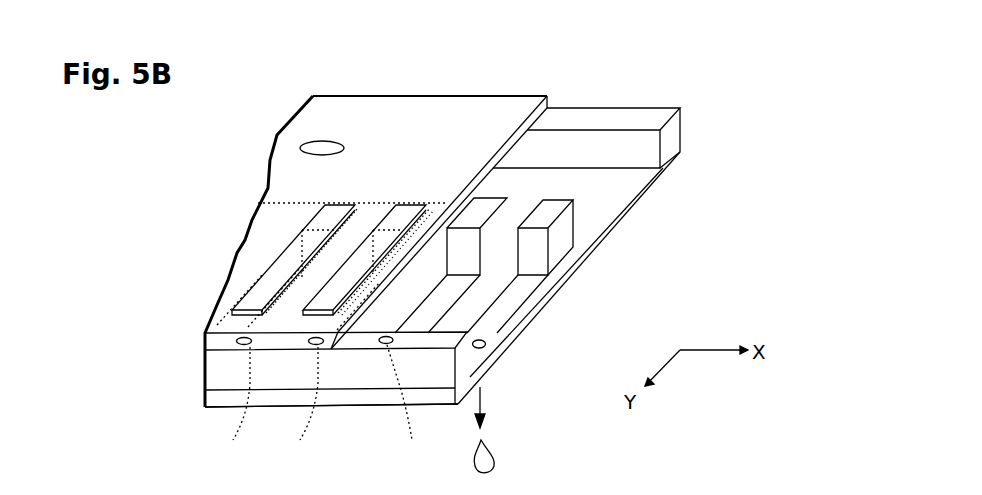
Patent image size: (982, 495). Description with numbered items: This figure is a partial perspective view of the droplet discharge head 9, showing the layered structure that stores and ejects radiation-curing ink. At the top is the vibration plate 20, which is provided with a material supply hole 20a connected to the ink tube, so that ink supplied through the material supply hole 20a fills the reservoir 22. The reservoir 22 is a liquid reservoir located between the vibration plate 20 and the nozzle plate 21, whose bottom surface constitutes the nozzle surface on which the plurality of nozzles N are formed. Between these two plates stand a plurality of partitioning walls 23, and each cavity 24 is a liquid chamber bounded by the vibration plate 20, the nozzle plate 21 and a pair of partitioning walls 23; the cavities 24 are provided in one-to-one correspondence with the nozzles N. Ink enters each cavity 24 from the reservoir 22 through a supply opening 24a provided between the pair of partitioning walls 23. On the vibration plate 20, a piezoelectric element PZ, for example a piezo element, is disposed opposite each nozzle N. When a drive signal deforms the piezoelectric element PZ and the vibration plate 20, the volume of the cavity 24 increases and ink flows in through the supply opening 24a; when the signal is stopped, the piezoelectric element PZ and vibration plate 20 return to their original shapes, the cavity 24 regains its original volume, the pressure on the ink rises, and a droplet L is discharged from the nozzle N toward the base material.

The droplet discharge head 9 is at (688, 90).
The vibration plate 20 is at (337, 332).
The material supply hole 20a is at (313, 148).
The nozzle plate 21 is at (618, 223).
The reservoir 22 is at (623, 182).
The partitioning walls 23 is at (493, 288).
The cavity 24 is at (437, 265).
The supply opening 24a is at (487, 227).
The piezoelectric element PZ is at (398, 220).
The nozzle N is at (537, 381).
The droplet L is at (495, 462).